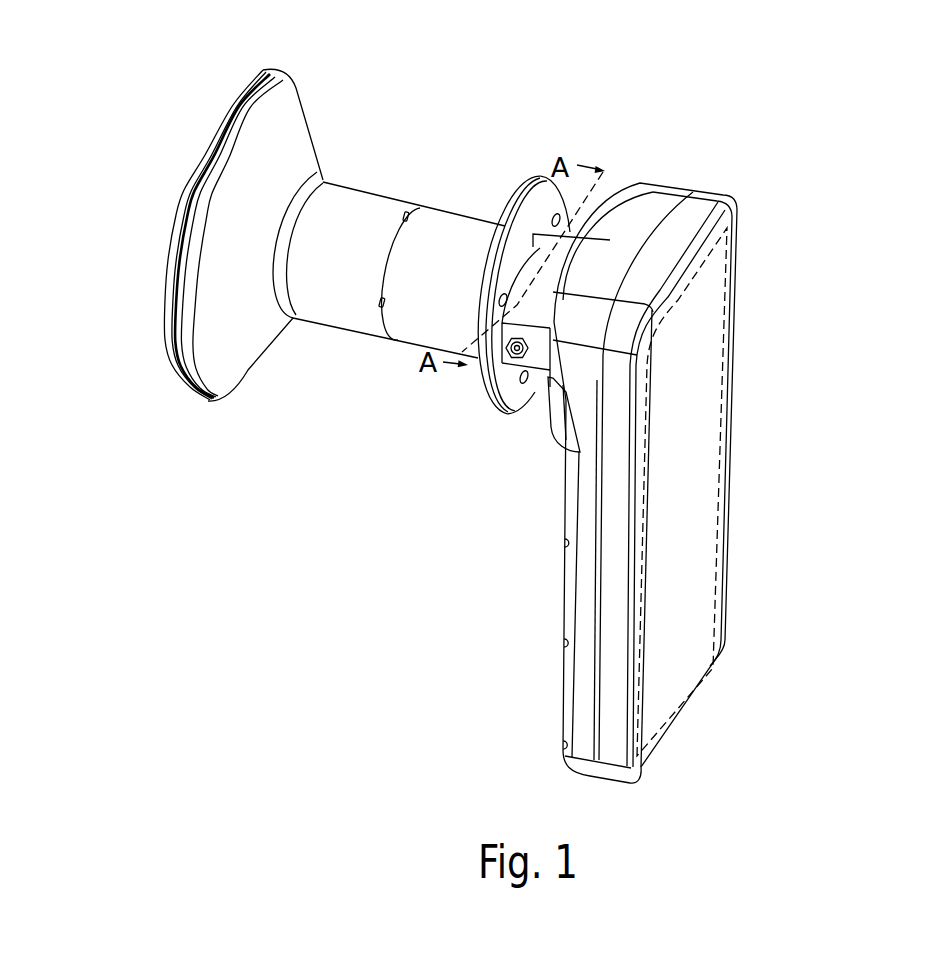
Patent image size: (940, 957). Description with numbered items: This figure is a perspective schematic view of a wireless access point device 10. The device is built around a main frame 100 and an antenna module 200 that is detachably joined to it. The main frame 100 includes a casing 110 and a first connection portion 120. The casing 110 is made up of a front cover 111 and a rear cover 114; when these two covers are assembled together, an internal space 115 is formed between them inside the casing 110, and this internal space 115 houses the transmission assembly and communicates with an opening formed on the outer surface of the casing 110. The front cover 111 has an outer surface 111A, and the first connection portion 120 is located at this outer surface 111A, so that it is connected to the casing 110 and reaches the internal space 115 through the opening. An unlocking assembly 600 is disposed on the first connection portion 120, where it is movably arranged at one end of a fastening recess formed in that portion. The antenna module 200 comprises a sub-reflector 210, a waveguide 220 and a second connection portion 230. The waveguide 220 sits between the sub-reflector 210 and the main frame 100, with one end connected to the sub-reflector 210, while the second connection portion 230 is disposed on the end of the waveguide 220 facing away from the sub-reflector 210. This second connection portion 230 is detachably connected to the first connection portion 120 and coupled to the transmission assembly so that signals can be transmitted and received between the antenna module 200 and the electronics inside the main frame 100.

The wireless access point device 10 is at (908, 69).
The main frame 100 is at (710, 192).
The casing 110 is at (803, 560).
The front cover 111 is at (583, 605).
The outer surface 111A is at (560, 675).
The rear cover 114 is at (608, 638).
The internal space 115 is at (706, 307).
The first connection portion 120 is at (572, 242).
The antenna module 200 is at (462, 478).
The sub-reflector 210 is at (243, 363).
The waveguide 220 is at (415, 330).
The second connection portion 230 is at (496, 412).
The unlocking assembly 600 is at (510, 362).